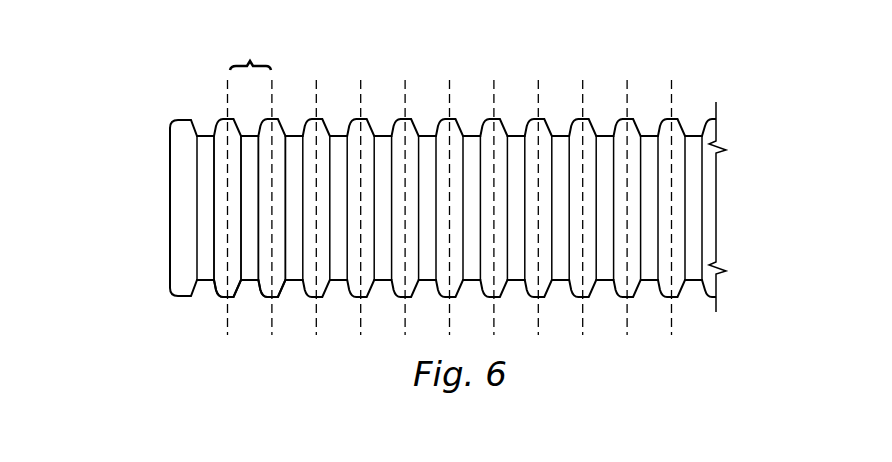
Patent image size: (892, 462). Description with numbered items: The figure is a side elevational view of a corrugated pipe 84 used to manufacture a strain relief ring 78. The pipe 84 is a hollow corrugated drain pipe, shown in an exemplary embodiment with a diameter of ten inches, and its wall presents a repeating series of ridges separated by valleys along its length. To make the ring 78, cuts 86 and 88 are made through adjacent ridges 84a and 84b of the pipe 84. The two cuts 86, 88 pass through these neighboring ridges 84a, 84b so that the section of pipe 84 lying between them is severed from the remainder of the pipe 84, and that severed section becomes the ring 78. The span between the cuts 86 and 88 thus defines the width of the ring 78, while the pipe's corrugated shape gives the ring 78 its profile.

The corrugated pipe 84 is at (138, 161).
The ridge 84a is at (216, 292).
The ridge 84b is at (260, 291).
The cut 86 is at (227, 102).
The cut 88 is at (273, 102).
The ring 78 is at (250, 50).